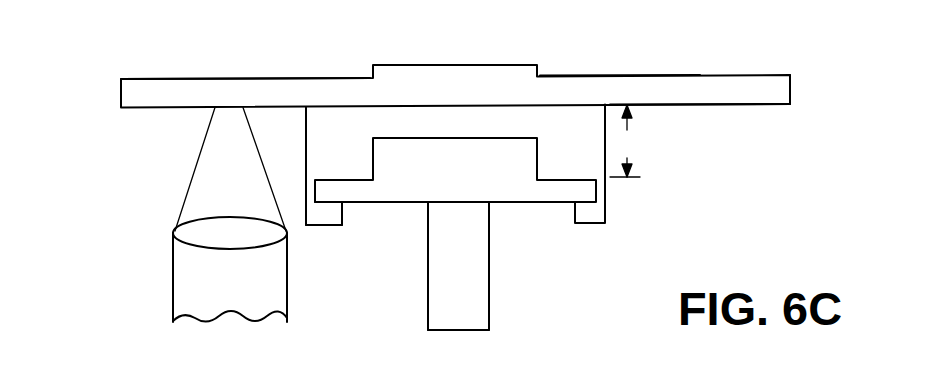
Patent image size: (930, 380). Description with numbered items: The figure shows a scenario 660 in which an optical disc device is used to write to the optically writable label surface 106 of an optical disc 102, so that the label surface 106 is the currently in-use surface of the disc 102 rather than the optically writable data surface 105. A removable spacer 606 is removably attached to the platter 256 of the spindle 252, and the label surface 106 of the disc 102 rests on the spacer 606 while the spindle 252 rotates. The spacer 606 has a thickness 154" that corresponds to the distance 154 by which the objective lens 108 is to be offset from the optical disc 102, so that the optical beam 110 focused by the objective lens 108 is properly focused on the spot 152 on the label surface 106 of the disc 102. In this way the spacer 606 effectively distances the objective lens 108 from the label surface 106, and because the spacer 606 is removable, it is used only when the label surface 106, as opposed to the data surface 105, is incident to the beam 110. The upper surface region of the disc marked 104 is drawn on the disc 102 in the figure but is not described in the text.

The optical disc 102 is at (790, 84).
The top surface of substrate 104 is at (712, 82).
The optically writable data surface 105 is at (776, 100).
The optically writable label surface 106 is at (733, 104).
The objective lens 108 is at (203, 230).
The optical beam 110 is at (252, 295).
The spot 152 is at (226, 107).
The distance 154 is at (633, 141).
The spindle 252 is at (437, 310).
The platter 256 is at (529, 195).
The spacer 606 is at (326, 210).
The scenario 660 is at (56, 186).